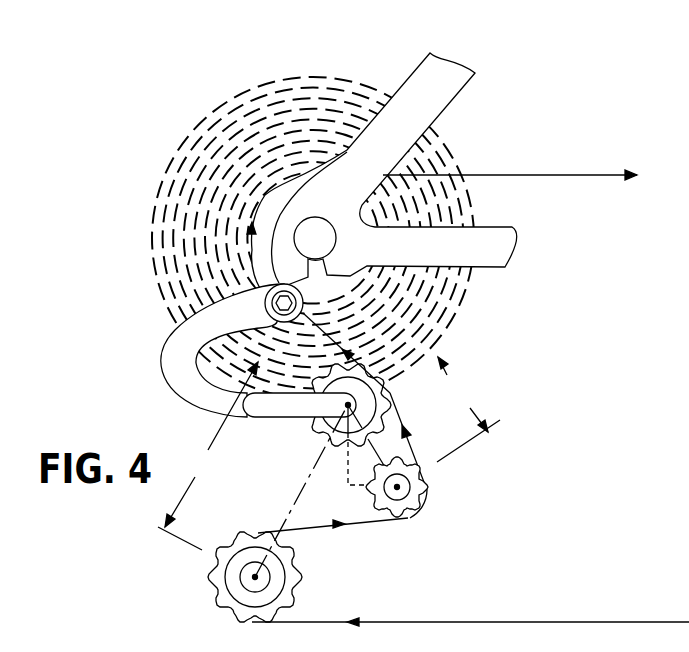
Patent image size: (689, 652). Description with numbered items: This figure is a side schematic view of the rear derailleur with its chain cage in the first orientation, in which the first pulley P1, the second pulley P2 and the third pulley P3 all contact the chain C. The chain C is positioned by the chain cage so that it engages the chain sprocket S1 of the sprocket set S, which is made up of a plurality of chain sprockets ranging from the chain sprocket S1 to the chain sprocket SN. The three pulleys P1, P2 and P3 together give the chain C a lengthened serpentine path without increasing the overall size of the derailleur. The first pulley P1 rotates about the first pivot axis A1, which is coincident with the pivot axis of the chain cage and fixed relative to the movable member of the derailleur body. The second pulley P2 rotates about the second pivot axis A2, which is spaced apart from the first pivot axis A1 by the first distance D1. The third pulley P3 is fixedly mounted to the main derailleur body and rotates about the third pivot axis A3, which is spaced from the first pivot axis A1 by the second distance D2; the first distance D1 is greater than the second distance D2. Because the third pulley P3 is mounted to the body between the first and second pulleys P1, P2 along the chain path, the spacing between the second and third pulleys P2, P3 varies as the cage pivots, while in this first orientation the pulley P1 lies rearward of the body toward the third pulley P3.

The sprocket set S is at (284, 204).
The chain sprocket SN is at (186, 138).
The chain sprocket S1 is at (245, 237).
The chain C is at (546, 172).
The first pulley P1 is at (326, 430).
The second pulley P2 is at (293, 570).
The third pulley P3 is at (375, 496).
The first pivot axis A1 is at (375, 388).
The second pivot axis A2 is at (248, 581).
The third pivot axis A3 is at (408, 490).
The first distance D1 is at (208, 456).
The second distance D2 is at (468, 409).